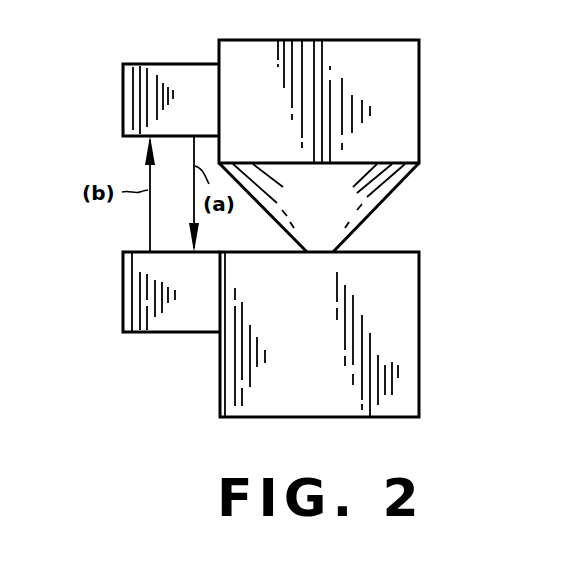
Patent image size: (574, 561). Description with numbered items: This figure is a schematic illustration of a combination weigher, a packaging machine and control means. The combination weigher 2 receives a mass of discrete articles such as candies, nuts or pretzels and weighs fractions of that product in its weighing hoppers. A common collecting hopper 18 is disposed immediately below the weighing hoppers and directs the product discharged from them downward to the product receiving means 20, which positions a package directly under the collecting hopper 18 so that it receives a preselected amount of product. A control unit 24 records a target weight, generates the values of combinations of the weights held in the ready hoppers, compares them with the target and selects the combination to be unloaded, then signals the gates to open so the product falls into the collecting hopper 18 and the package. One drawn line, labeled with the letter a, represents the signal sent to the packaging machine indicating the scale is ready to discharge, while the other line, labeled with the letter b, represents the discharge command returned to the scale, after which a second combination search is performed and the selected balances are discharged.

The combination weigher 2 is at (419, 97).
The collecting hopper 18 is at (400, 192).
The product receiving means 20 is at (419, 342).
The control unit 24 is at (122, 90).